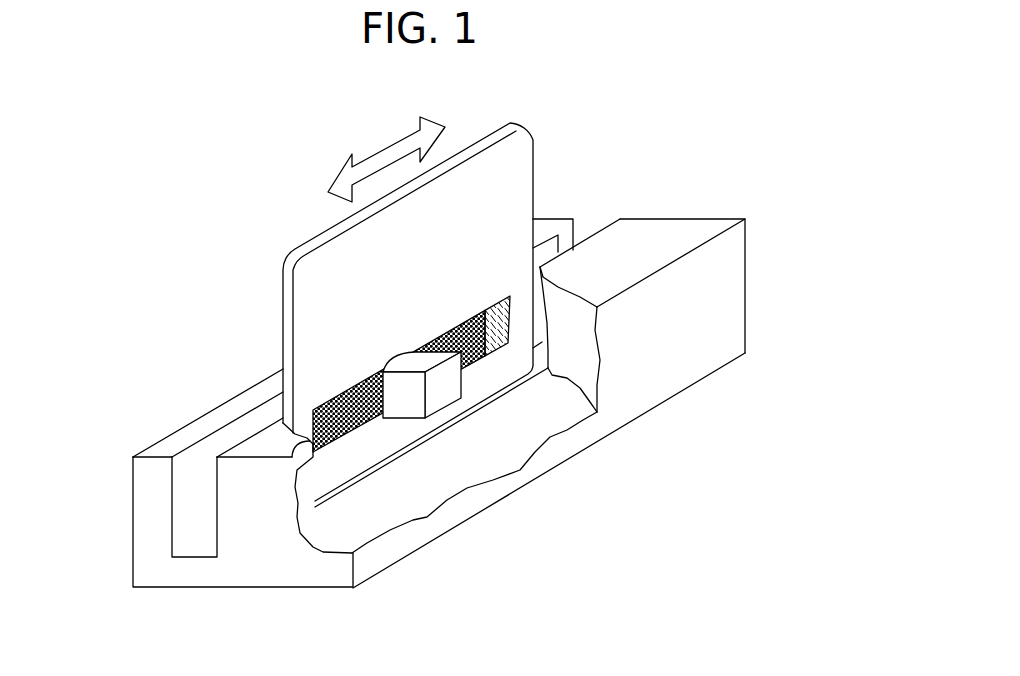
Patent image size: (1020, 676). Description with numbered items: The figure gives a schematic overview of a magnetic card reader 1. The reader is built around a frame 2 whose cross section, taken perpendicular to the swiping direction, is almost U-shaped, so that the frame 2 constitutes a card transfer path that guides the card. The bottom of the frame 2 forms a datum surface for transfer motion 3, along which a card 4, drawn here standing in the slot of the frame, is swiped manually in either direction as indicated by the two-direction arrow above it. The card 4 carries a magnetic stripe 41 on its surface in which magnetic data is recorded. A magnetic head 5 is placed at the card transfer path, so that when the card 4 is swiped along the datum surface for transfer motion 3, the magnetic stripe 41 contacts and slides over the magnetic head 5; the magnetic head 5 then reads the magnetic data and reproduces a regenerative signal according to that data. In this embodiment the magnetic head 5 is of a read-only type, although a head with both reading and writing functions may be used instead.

The magnetic card reader 1 is at (208, 318).
The frame 2 is at (162, 478).
The datum surface for transfer motion 3 is at (183, 555).
The card 4 is at (328, 287).
The magnetic stripe 41 is at (468, 313).
The magnetic head 5 is at (413, 402).